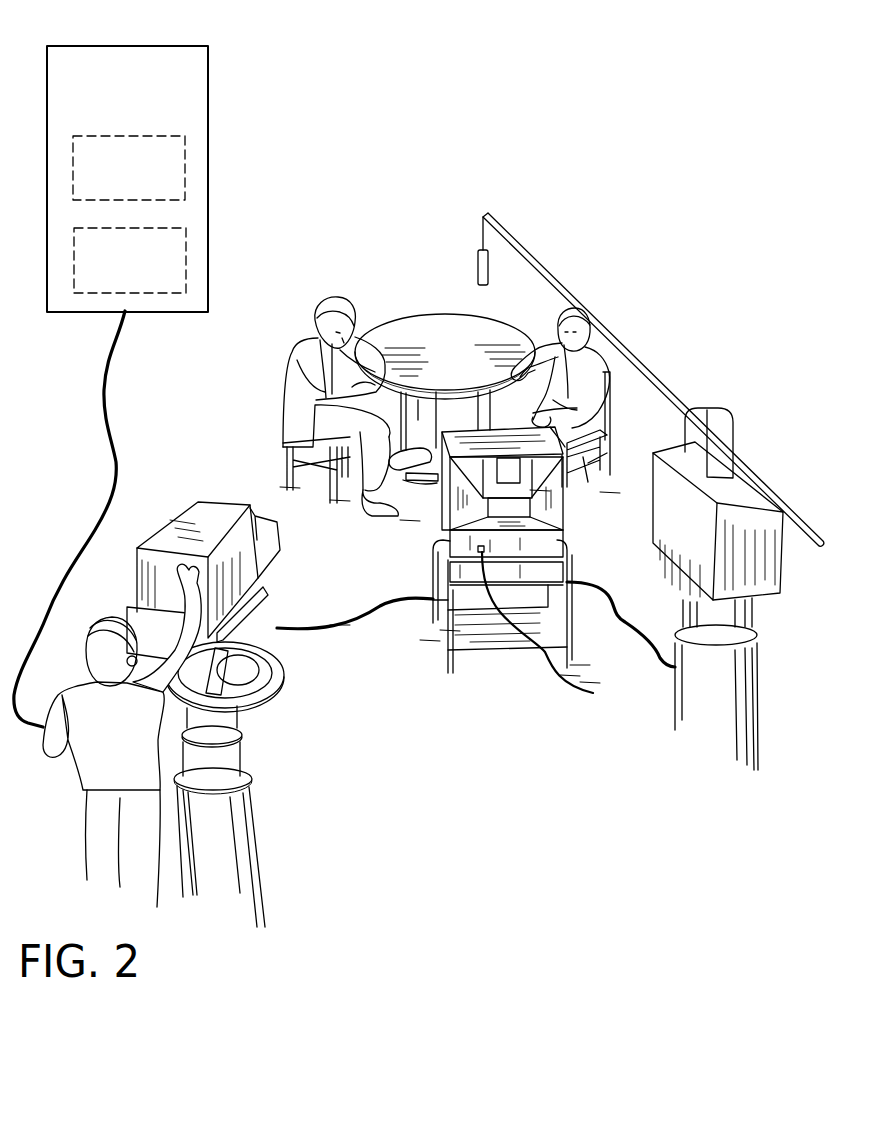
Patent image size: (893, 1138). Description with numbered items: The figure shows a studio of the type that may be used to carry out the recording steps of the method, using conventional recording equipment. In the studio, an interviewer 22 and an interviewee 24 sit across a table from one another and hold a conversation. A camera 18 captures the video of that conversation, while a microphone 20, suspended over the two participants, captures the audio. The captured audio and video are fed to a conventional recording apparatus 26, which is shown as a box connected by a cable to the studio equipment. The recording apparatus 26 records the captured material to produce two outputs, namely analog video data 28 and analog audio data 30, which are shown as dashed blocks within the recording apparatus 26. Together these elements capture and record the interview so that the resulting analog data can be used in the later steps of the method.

The camera 18 is at (200, 503).
The microphone 20 is at (477, 272).
The interviewer 22 is at (287, 385).
The interviewee 24 is at (600, 373).
The recording apparatus 26 is at (175, 179).
The analog video data 28 is at (185, 165).
The analog audio data 30 is at (187, 252).